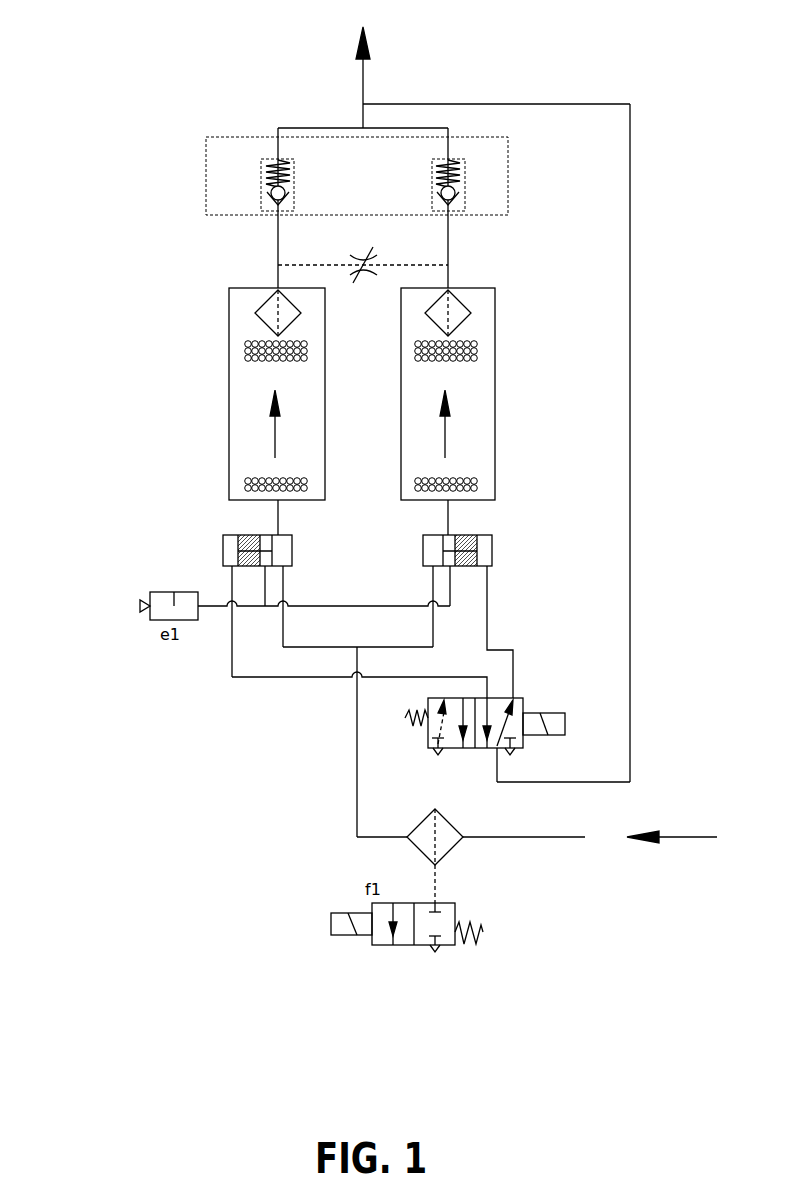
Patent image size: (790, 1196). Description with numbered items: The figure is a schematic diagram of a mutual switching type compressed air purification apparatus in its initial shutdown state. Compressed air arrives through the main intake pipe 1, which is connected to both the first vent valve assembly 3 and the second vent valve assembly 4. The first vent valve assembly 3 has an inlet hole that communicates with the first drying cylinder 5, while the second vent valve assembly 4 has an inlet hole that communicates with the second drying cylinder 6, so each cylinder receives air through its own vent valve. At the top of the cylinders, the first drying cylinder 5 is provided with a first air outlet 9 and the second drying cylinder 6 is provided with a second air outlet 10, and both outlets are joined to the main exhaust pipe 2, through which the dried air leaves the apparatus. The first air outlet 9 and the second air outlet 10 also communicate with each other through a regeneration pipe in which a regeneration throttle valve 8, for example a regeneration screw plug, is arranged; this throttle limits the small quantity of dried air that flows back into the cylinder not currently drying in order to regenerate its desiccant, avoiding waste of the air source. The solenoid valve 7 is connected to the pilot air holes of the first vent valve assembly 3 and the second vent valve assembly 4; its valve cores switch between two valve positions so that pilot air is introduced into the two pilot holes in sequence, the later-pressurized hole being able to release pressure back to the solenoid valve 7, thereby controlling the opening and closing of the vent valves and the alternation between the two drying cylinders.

The main intake pipe 1 is at (553, 855).
The main exhaust pipe 2 is at (372, 75).
The first vent valve assembly 3 is at (490, 547).
The second vent valve assembly 4 is at (225, 546).
The first drying cylinder 5 is at (485, 424).
The second drying cylinder 6 is at (233, 425).
The solenoid valve 7 is at (560, 717).
The regeneration throttle valve 8 is at (392, 255).
The first air outlet 9 is at (456, 234).
The second air outlet 10 is at (270, 236).